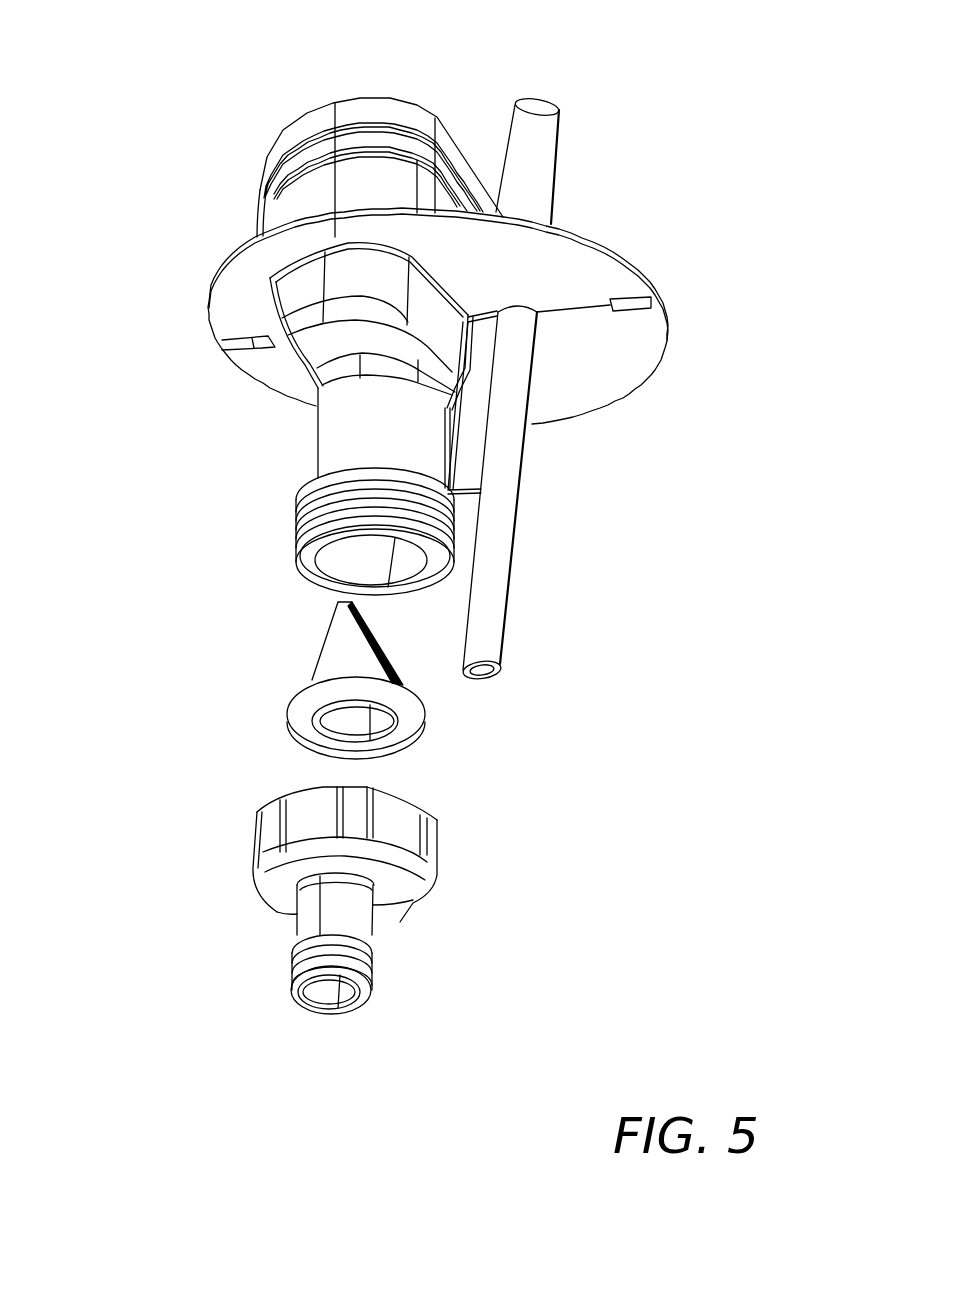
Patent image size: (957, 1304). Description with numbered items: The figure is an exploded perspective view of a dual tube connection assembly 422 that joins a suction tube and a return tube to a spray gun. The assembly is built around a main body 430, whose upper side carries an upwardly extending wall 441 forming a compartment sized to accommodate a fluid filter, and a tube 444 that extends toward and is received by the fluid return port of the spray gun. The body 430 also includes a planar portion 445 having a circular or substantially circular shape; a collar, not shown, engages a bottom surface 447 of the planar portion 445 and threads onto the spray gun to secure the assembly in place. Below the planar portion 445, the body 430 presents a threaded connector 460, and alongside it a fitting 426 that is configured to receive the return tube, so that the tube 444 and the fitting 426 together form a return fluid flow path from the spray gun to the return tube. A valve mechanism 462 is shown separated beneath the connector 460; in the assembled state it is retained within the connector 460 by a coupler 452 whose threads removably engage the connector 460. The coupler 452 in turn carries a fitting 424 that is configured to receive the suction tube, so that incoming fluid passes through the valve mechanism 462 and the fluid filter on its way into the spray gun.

The dual tube connection assembly 422 is at (160, 82).
The tube 444 is at (540, 145).
The upwardly extending wall 441 is at (300, 190).
The bottom surface 447 is at (225, 312).
The planar portion 445 is at (593, 287).
The main body 430 is at (307, 347).
The fitting 426 is at (500, 487).
The connector 460 is at (328, 462).
The valve mechanism 462 is at (330, 650).
The coupler 452 is at (412, 848).
The fitting 424 is at (363, 937).